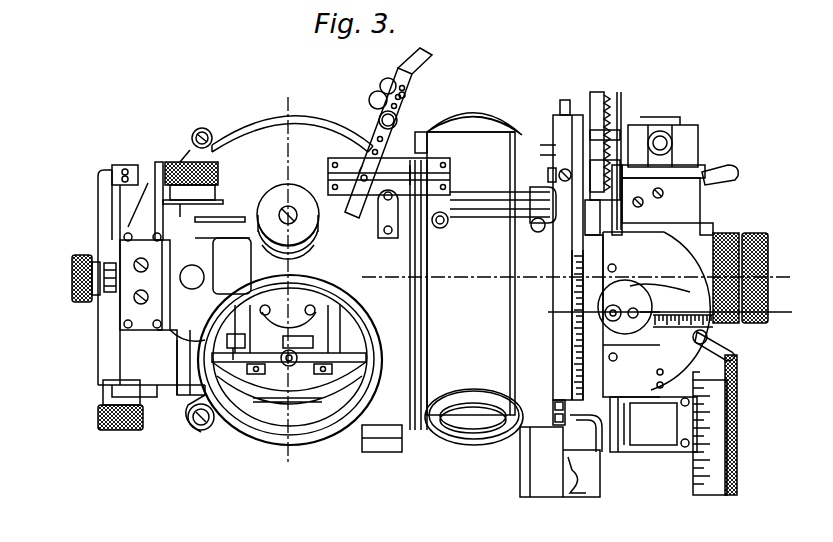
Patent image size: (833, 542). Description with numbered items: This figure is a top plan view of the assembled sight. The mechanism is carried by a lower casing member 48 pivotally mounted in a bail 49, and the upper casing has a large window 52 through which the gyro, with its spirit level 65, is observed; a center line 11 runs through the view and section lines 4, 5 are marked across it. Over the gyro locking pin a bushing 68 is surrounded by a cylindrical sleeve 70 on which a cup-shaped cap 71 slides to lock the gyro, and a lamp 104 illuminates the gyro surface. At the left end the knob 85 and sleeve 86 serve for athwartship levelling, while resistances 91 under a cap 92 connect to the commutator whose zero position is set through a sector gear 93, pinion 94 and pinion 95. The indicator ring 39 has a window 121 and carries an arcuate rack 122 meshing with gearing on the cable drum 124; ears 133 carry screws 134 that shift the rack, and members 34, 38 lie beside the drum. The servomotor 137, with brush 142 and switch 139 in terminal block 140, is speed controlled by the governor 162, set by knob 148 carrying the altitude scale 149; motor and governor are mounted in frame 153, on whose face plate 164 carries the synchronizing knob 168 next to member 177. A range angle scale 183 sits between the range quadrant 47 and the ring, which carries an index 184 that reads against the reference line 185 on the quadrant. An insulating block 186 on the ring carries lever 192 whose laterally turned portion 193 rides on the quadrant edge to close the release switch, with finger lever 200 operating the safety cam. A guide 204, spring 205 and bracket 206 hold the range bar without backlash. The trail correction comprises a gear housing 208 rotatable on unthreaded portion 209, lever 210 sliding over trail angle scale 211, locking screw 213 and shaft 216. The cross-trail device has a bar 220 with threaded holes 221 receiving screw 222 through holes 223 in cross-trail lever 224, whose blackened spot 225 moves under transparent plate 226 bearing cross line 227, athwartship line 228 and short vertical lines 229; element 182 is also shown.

The section line 4 is at (574, 277).
The section line 5 is at (668, 312).
The vertical axis line 11 is at (285, 280).
The rack member 34 is at (606, 102).
The gear rack 38 is at (592, 92).
The indicator ring 39 is at (553, 136).
The range quadrant 47 is at (626, 322).
The lower casing member 48 is at (320, 126).
The bail 49 is at (398, 446).
The large window 52 is at (325, 292).
The spirit level 65 is at (312, 345).
The bushing 68 is at (246, 342).
The cylindrical sleeve 70 is at (266, 262).
The cup-shaped cap 71 is at (270, 200).
The knob 85 is at (98, 422).
The sleeve 86 is at (72, 290).
The resistances 91 is at (170, 280).
The cap 92 is at (103, 230).
The sector gear 93 is at (138, 254).
The pinion 94 is at (108, 300).
The pinion 95 is at (134, 294).
The lamp 104 is at (212, 268).
The window 121 is at (474, 417).
The arcuate rack 122 is at (484, 126).
The cable drum 124 is at (619, 130).
The ears 133 is at (568, 100).
The screws 134 is at (566, 102).
The servomotor 137 is at (700, 167).
The switch 139 is at (726, 170).
The terminal block 140 is at (656, 200).
The brush 142 is at (672, 138).
The knob 148 is at (728, 390).
The scale 149 is at (737, 445).
The frame 153 is at (660, 250).
The governor 162 is at (653, 424).
The plate 164 is at (708, 222).
The synchronizing knob 168 is at (730, 233).
The knurled knob 177 is at (762, 233).
The cylinder body 182 is at (428, 335).
The range angle scale 183 is at (572, 330).
The index 184 is at (560, 400).
The reference line 185 is at (625, 307).
The block 186 is at (540, 488).
The lever 192 is at (600, 455).
The laterally turned portion 193 is at (600, 412).
The finger lever 200 is at (586, 490).
The guide 204 is at (619, 288).
The spring 205 is at (599, 260).
The bracket 206 is at (655, 125).
The gear housing 208 is at (630, 345).
The unthreaded portion 209 is at (666, 300).
The lever 210 is at (683, 314).
The trail angle scale 211 is at (718, 353).
The screw 213 is at (707, 337).
The shaft 216 is at (690, 285).
The bar 220 is at (388, 78).
The threaded holes 221 is at (380, 96).
The screw 222 is at (400, 116).
The holes 223 is at (408, 96).
The cross-trail lever 224 is at (423, 78).
The blackened spot 225 is at (352, 196).
The transparent plate 226 is at (430, 167).
The cross line 227 is at (380, 168).
The athwartship line 228 is at (450, 173).
The short vertical lines 229 is at (380, 195).